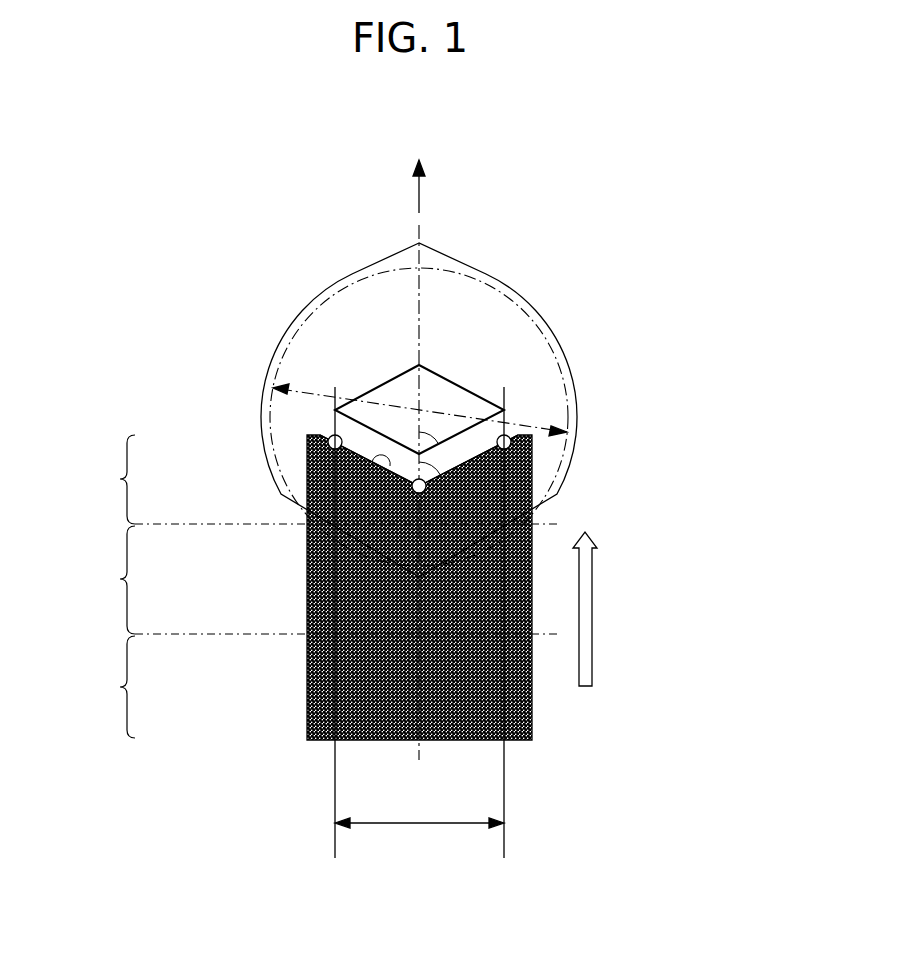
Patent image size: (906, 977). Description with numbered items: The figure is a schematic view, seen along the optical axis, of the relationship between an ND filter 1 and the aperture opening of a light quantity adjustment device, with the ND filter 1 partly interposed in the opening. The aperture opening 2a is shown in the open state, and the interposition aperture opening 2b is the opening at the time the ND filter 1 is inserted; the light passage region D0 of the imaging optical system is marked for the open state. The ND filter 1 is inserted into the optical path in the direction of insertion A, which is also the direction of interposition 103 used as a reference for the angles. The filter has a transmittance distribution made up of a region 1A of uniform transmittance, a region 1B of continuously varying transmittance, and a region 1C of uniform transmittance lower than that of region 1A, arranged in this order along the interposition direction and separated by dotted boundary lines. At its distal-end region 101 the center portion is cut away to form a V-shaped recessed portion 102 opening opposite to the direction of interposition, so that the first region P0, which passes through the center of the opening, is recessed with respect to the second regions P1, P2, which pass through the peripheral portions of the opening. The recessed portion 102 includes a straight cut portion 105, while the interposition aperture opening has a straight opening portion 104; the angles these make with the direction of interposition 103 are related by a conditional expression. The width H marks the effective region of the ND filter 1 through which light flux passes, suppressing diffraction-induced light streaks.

The ND filter 1 is at (378, 498).
The region with a uniform transmittance 1A is at (110, 479).
The region with a continuously varying transmittance 1B is at (110, 580).
The region with a uniform transmittance lower than that of region 1A 1C is at (110, 687).
The aperture opening in the open state 2a is at (305, 306).
The interposition aperture opening 2b is at (384, 393).
The distal-end region 101 is at (520, 455).
The recessed portion 102 is at (355, 447).
The direction of interposition 103 is at (420, 449).
The straight opening portion 104 is at (396, 390).
The straight cut portion 105 is at (372, 462).
The first region P0 is at (427, 487).
The second region P1 is at (328, 443).
The second region P2 is at (506, 434).
The light passage region D0 is at (545, 428).
The width of the effective region H is at (419, 623).
The direction of insertion A is at (596, 609).